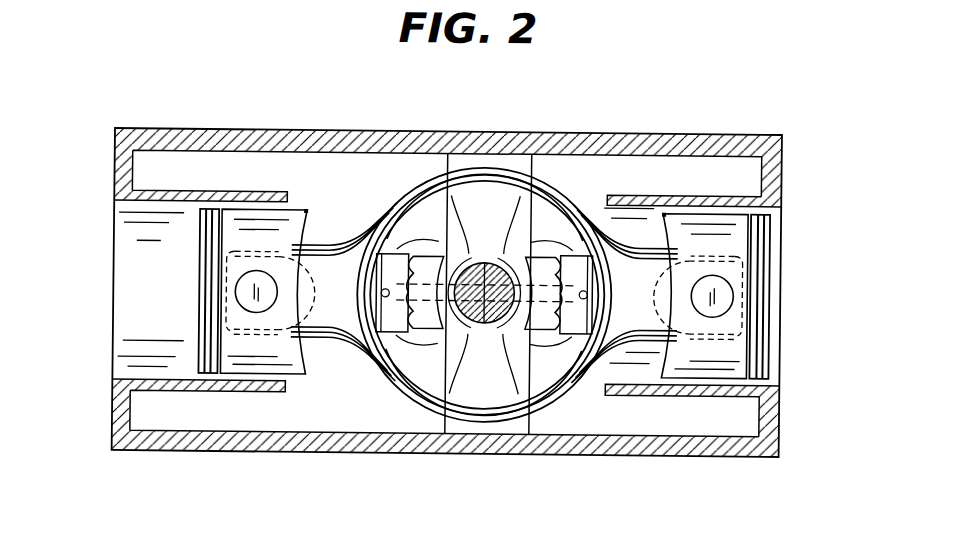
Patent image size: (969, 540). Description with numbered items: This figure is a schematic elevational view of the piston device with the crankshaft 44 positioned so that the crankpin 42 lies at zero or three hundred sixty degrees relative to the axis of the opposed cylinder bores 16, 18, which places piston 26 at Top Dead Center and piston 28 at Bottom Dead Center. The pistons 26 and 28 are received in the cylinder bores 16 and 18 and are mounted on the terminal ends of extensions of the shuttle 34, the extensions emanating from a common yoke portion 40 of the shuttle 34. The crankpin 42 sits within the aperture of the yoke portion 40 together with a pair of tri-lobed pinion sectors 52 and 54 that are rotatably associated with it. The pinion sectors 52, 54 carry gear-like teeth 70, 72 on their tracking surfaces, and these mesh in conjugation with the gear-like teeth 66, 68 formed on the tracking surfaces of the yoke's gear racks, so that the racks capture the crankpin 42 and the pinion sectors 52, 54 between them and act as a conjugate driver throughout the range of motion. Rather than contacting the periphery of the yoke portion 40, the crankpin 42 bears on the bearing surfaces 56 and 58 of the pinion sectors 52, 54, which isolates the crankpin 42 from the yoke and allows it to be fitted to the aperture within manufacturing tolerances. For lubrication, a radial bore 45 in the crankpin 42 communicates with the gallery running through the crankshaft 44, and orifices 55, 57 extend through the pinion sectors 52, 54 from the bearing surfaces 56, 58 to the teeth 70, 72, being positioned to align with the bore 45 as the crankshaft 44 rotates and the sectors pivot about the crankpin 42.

The cylinder bore 16 is at (778, 233).
The cylinder bore 18 is at (147, 264).
The piston 26 is at (713, 222).
The piston 28 is at (258, 222).
The shuttle 34 is at (378, 193).
The yoke portion 40 is at (533, 150).
The crankpin 42 is at (490, 254).
The crankshaft 44 is at (449, 150).
The bore 45 is at (483, 321).
The pinion sector 52 is at (517, 212).
The pinion sector 54 is at (460, 254).
The orifice 55 is at (556, 350).
The bearing surface 56 is at (529, 430).
The orifice 57 is at (488, 328).
The bearing surface 58 is at (424, 398).
The gear-like teeth 66 is at (592, 272).
The gear-like teeth 68 is at (400, 318).
The gear-like teeth 70 is at (542, 252).
The gear-like teeth 72 is at (400, 323).